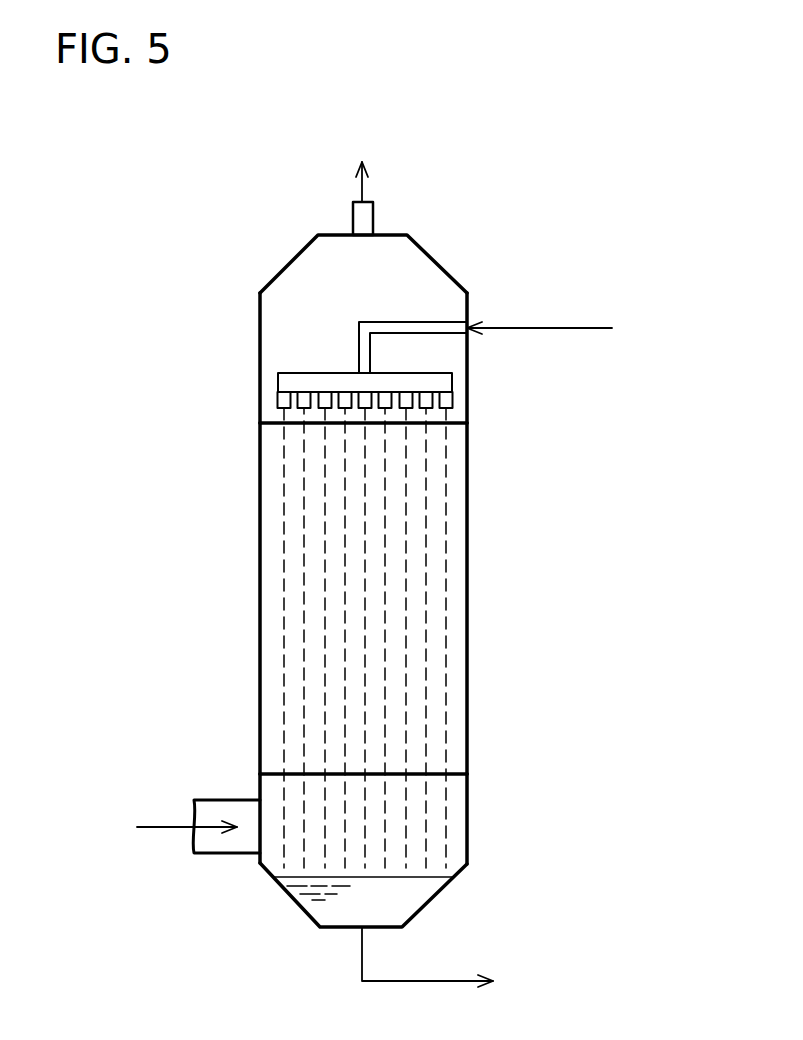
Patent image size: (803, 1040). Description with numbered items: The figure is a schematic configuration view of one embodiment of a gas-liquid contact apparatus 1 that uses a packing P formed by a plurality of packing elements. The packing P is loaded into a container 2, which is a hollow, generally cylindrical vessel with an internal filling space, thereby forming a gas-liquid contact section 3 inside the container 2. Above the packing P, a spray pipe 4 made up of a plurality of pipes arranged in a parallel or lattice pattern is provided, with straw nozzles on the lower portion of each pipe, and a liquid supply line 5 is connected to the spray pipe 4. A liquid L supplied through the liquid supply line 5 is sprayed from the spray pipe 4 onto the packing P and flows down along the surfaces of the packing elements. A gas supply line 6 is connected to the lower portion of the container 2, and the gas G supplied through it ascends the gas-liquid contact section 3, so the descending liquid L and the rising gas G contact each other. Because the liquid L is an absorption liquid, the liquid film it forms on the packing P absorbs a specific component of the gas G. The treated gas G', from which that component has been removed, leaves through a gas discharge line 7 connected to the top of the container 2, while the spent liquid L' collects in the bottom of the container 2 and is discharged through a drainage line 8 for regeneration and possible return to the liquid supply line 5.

The gas-liquid contact apparatus 1 is at (258, 260).
The container 2 is at (467, 366).
The gas-liquid contact section 3 is at (468, 582).
The spray pipe 4 is at (315, 373).
The liquid supply line 5 is at (423, 322).
The gas supply line 6 is at (232, 800).
The gas discharge line 7 is at (370, 217).
The drainage line 8 is at (362, 950).
The packing P is at (456, 417).
The liquid L is at (551, 330).
The gas G is at (174, 828).
The gas G' is at (365, 164).
The liquid L' is at (476, 945).